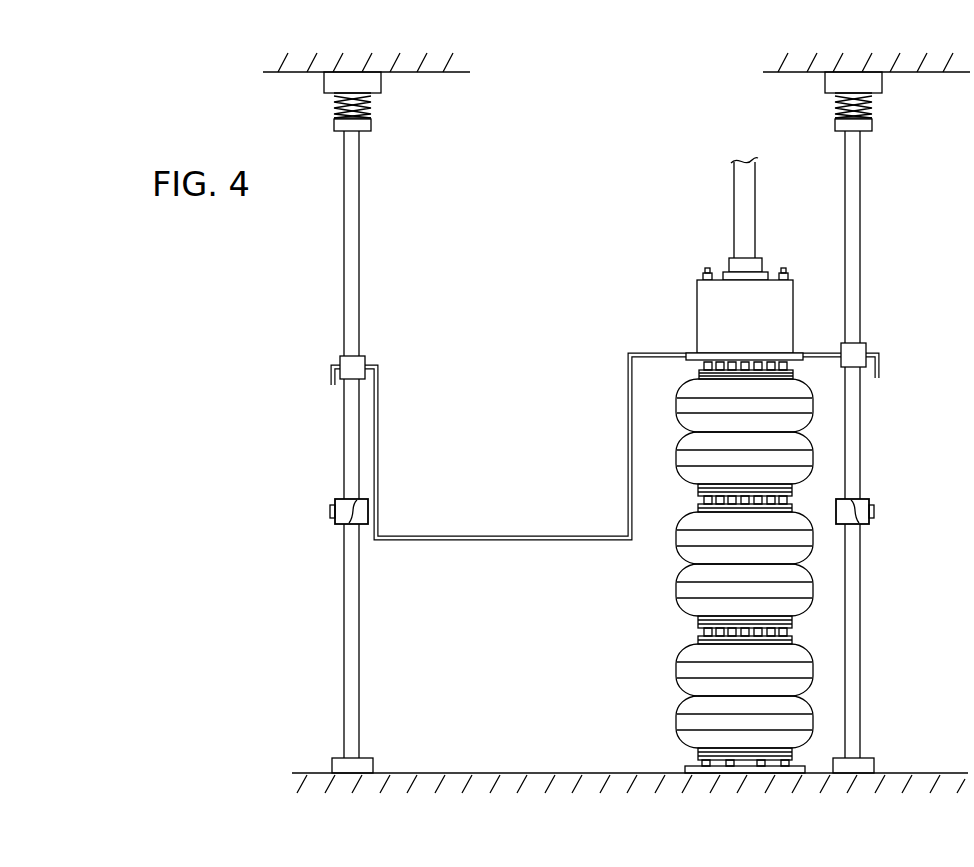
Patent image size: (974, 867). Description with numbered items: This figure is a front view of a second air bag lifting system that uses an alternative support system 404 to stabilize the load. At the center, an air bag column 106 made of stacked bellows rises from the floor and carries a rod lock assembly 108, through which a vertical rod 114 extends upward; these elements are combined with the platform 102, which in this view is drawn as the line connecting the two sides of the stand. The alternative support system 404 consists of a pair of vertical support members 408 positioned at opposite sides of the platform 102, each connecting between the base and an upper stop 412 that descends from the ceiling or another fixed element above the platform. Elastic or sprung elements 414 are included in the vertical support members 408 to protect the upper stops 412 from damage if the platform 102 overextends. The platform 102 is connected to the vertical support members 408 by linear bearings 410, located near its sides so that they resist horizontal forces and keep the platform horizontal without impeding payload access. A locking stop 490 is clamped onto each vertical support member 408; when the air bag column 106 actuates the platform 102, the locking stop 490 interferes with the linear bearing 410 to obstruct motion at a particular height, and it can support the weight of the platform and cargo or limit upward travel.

The platform 102 is at (490, 555).
The air bag column 106 is at (640, 603).
The rod lock assembly 108 is at (668, 282).
The vertical rod 114 is at (734, 180).
The alternative support system 404 is at (320, 490).
The vertical support member 408 is at (360, 610).
The linear bearing 410 is at (340, 358).
The upper stop 412 is at (381, 88).
The elastic or sprung element 414 is at (371, 124).
The locking stop 490 is at (335, 523).